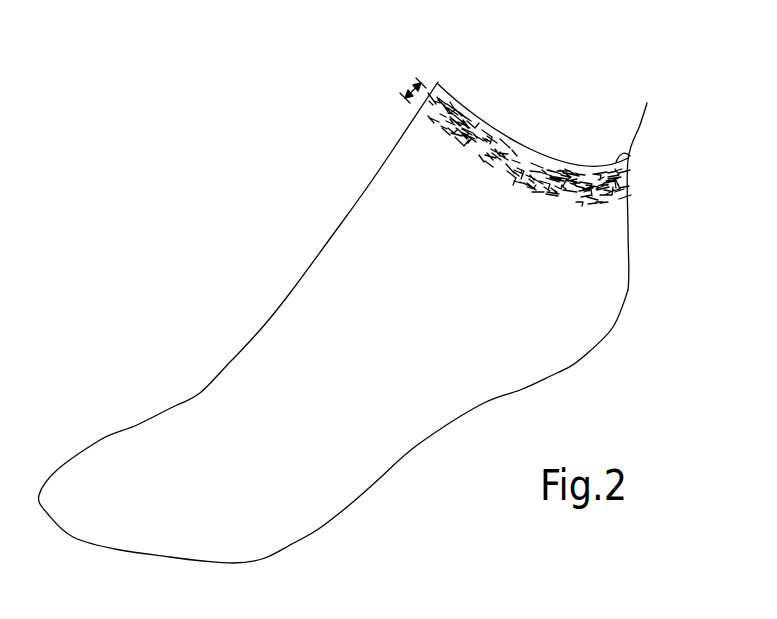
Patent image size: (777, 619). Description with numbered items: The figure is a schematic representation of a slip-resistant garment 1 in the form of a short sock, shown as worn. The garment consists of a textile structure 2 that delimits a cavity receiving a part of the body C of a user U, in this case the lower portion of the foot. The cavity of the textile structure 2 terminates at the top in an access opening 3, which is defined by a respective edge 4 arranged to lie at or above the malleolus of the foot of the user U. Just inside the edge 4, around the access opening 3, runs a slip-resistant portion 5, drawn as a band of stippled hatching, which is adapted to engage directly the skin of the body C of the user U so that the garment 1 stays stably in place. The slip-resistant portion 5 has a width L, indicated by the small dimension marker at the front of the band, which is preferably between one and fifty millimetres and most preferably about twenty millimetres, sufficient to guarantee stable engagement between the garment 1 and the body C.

The slip-resistant garment 1 is at (282, 254).
The textile structure 2 is at (634, 249).
The access opening 3 is at (465, 92).
The edge 4 is at (628, 158).
The slip-resistant portion 5 is at (420, 110).
The width L is at (414, 84).
The user U is at (643, 115).
The body C is at (633, 142).